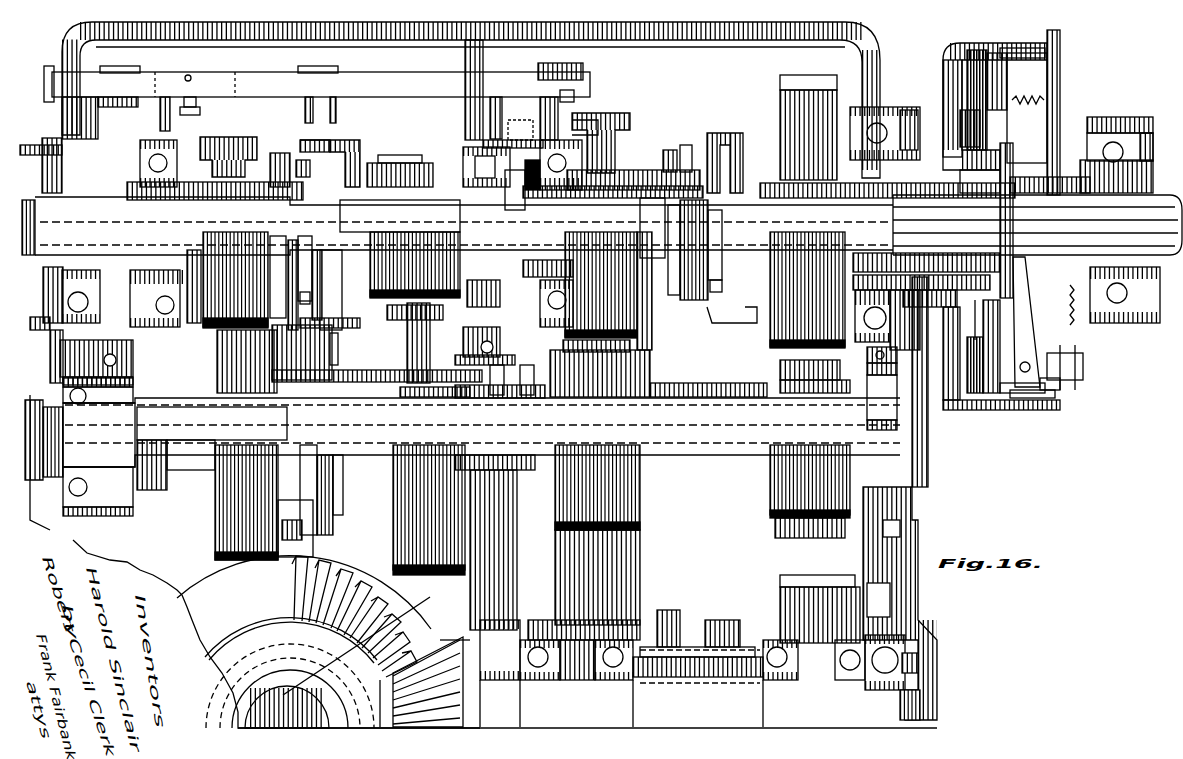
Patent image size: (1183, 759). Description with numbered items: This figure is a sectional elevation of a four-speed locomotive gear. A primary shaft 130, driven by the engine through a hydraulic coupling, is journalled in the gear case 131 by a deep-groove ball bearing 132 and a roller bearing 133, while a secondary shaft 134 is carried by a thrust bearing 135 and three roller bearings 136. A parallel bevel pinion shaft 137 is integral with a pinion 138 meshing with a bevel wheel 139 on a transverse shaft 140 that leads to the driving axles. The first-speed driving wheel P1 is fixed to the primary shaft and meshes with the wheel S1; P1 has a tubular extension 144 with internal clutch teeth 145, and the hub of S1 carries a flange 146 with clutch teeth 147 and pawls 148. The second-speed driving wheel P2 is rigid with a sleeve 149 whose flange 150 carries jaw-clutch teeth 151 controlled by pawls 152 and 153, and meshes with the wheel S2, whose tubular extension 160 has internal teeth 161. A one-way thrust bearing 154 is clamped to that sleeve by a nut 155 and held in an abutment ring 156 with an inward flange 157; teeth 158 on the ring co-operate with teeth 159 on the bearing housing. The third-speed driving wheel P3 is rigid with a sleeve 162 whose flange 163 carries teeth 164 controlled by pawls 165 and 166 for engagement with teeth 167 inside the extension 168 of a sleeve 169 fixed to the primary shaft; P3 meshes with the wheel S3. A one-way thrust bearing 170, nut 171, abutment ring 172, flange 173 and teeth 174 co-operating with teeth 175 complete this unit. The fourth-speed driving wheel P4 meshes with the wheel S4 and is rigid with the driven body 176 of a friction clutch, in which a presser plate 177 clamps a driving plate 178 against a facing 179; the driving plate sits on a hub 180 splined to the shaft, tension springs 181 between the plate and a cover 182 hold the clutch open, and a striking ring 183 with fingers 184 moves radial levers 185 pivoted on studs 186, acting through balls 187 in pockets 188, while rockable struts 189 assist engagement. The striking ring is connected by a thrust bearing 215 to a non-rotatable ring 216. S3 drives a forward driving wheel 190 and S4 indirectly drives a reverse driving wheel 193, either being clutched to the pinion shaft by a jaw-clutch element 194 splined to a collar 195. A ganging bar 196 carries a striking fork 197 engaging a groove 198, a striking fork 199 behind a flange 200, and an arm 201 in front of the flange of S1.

The primary shaft 130 is at (1150, 198).
The gear case 131 is at (870, 44).
The deep-groove ball bearing 132 is at (66, 301).
The roller bearing 133 is at (463, 158).
The secondary shaft 134 is at (694, 428).
The thrust bearing 135 is at (82, 410).
The roller bearings 136 is at (863, 396).
The bevel pinion shaft 137 is at (925, 700).
The pinion 138 is at (460, 635).
The bevel wheel 139 is at (338, 570).
The transverse shaft 140 is at (405, 625).
The tubular extension 144 is at (355, 140).
The internal clutch teeth 145 is at (305, 152).
The flange 146 is at (333, 465).
The helical clutch teeth 147 is at (325, 520).
The pawls 148 is at (308, 445).
The sleeve 149 is at (270, 196).
The flange 150 is at (310, 172).
The helical jaw-clutch teeth 151 is at (297, 246).
The pawls 152 is at (310, 297).
The pawls 153 is at (278, 152).
The one-way thrust bearing 154 is at (165, 270).
The nut 155 is at (134, 306).
The abutment ring 156 is at (155, 335).
The inwardly directed flange 157 is at (138, 160).
The axially projecting teeth 158 is at (123, 79).
The axially projecting teeth 159 is at (104, 135).
The tubular extension 160 is at (295, 528).
The internal helical clutch teeth 161 is at (312, 348).
The sleeve 162 is at (648, 170).
The flange 163 is at (678, 148).
The helical jaw-clutch teeth 164 is at (694, 230).
The pawls 165 is at (672, 190).
The pawls 166 is at (708, 292).
The helical jaw-clutch teeth 167 is at (732, 323).
The tubular extension 168 is at (742, 135).
The sleeve 169 is at (793, 190).
The one-way thrust bearing 170 is at (555, 190).
The nut 171 is at (522, 180).
The abutment ring 172 is at (545, 330).
The inwardly directed flange 173 is at (532, 158).
The axially projecting teeth 174 is at (510, 122).
The axially projecting teeth 175 is at (525, 120).
The driven body 176 is at (940, 58).
The presser plate 177 is at (1007, 84).
The driving plate 178 is at (980, 125).
The facing 179 is at (948, 85).
The hub 180 is at (1035, 177).
The tension springs 181 is at (1028, 110).
The cover 182 is at (1050, 80).
The striking ring 183 is at (1080, 168).
The axial fingers 184 is at (1080, 318).
The radial levers 185 is at (1060, 385).
The studs 186 is at (1083, 366).
The balls 187 is at (1015, 335).
The pockets 188 is at (1015, 396).
The oblique rockable struts 189 is at (1015, 52).
The forward driving wheel 190 is at (640, 561).
The reverse driving wheel 193 is at (805, 575).
The jaw-clutch element 194 is at (688, 628).
The collar 195 is at (664, 670).
The ganging bar 196 is at (317, 84).
The striking fork 197 is at (170, 115).
The groove 198 is at (175, 300).
The striking fork 199 is at (548, 97).
The flange 200 is at (575, 120).
The arm 201 is at (336, 112).
The thrust bearing 215 is at (1120, 115).
The non-rotatable ring 216 is at (1140, 323).
The first-speed driving wheel P1 is at (395, 162).
The second-speed driving wheel P2 is at (228, 137).
The third-speed driving wheel P3 is at (606, 114).
The fourth-speed driving wheel P4 is at (803, 76).
The first-speed wheel S1 is at (345, 505).
The second-speed wheel S2 is at (215, 543).
The third-speed wheel S3 is at (642, 520).
The fourth-speed wheel S4 is at (818, 488).